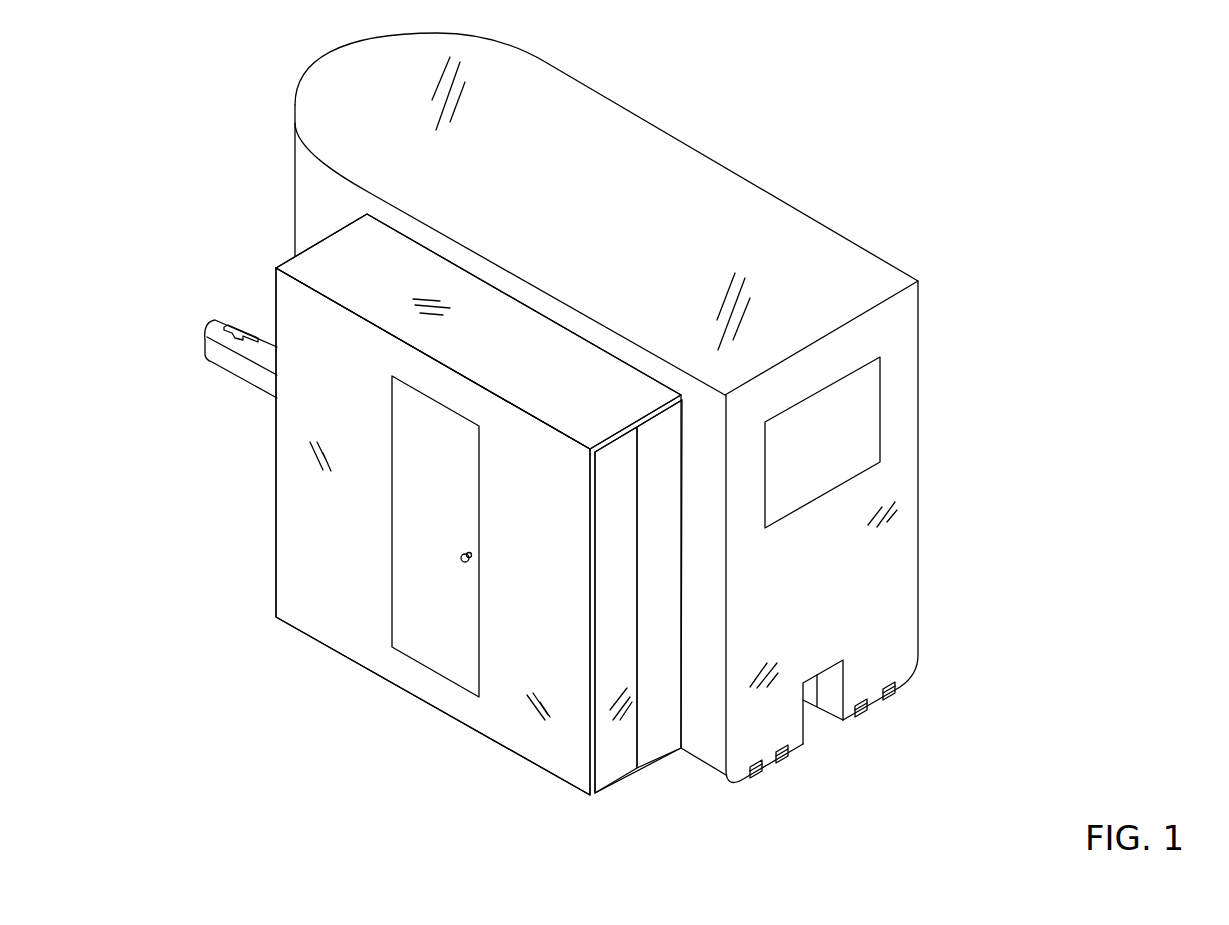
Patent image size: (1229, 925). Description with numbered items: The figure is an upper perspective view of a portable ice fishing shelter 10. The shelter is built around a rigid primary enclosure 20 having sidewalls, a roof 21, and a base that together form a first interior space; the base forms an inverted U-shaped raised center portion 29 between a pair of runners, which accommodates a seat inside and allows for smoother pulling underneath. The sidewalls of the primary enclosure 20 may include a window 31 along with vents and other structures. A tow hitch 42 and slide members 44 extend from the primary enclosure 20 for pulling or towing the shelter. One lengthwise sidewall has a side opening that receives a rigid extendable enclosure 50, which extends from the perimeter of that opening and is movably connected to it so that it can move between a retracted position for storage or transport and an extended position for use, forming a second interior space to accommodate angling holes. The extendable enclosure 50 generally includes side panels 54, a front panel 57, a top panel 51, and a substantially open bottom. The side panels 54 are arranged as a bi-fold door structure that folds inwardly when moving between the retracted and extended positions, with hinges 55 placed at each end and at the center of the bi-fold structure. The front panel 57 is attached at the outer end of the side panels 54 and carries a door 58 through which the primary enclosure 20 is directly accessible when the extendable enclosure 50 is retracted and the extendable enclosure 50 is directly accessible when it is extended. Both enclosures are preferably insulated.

The portable ice fishing shelter 10 is at (1006, 122).
The primary enclosure 20 is at (934, 497).
The roof 21 is at (535, 117).
The raised center portion 29 is at (817, 708).
The window 31 is at (868, 420).
The tow hitch 42 is at (212, 332).
The slide members 44 is at (758, 777).
The extendable enclosure 50 is at (496, 754).
The top panel 51 is at (372, 297).
The side panels 54 is at (660, 737).
The hinges 55 is at (637, 716).
The front panel 57 is at (307, 572).
The door 58 is at (443, 616).